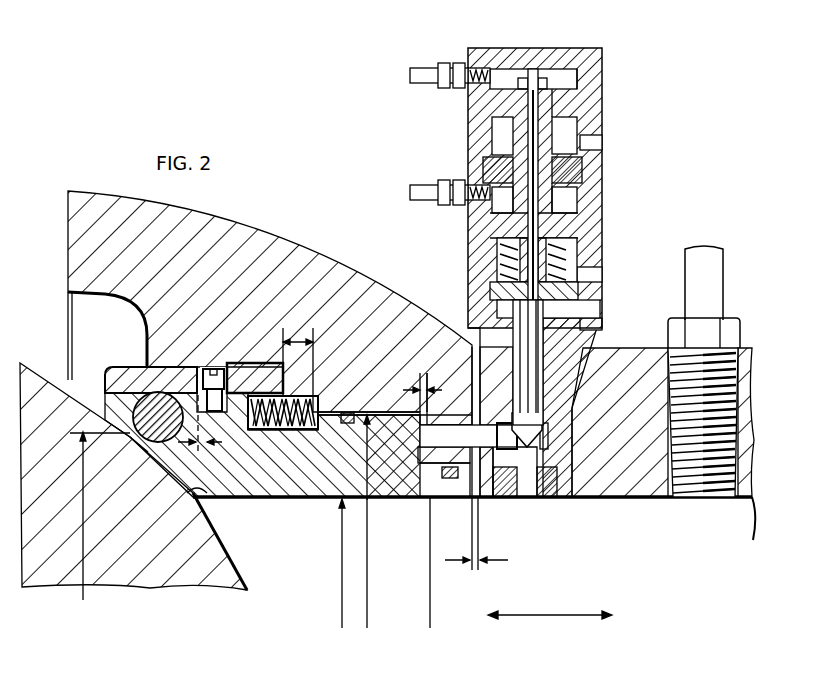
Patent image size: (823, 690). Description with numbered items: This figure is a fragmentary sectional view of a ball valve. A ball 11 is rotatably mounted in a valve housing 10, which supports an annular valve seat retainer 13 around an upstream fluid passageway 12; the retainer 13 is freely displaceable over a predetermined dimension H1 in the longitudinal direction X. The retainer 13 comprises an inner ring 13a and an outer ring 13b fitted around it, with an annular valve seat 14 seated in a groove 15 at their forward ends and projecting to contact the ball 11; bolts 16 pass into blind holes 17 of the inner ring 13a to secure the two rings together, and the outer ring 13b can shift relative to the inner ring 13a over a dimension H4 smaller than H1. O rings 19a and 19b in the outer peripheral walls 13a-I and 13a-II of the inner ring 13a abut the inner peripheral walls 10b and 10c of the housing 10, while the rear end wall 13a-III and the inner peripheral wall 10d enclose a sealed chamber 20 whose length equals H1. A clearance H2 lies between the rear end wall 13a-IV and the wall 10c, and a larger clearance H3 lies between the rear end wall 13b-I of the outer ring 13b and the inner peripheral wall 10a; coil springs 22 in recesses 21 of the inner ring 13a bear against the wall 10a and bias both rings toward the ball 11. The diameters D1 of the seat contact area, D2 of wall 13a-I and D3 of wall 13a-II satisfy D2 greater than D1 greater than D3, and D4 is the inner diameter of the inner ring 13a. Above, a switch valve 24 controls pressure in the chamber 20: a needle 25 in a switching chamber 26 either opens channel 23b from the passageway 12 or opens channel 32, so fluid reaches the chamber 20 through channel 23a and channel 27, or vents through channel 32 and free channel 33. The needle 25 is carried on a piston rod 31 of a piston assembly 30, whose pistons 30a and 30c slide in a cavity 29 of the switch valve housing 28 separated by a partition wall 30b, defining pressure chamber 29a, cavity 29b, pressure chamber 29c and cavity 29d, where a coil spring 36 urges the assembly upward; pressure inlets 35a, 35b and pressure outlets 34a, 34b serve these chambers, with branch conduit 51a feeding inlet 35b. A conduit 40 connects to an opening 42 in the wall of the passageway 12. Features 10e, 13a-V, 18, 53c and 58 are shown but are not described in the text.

The valve housing 10 is at (249, 232).
The inner peripheral wall 10a is at (313, 384).
The inner peripheral wall 10b is at (315, 432).
The inner peripheral wall 10c is at (436, 420).
The inner peripheral wall 10d is at (428, 425).
The body bore 10e is at (488, 497).
The ball 11 is at (139, 514).
The upstream fluid passageway 12 is at (658, 560).
The valve seat retainer 13 is at (282, 497).
The inner ring 13a is at (262, 497).
The outer peripheral wall 13a-I is at (366, 414).
The outer peripheral wall 13a-II is at (478, 400).
The rear end wall 13a-III is at (380, 500).
The rear end wall 13a-IV is at (472, 560).
The seal ring face V 13a-V is at (200, 510).
The outer ring 13b is at (126, 367).
The rear end wall 13b-I is at (281, 380).
The valve seat 14 is at (133, 412).
The groove 15 is at (148, 443).
The bolts 16 is at (208, 367).
The blind holes 17 is at (203, 418).
The retainer block 18 is at (235, 363).
The O ring 19a is at (348, 425).
The O ring 19b is at (450, 480).
The sealed chamber 20 is at (420, 430).
The recesses 21 is at (296, 430).
The coil spring 22 is at (258, 430).
The channel 23a is at (546, 508).
The channel 23b is at (518, 497).
The switch valve 24 is at (604, 216).
The needle 25 is at (548, 437).
The switching chamber 26 is at (542, 447).
The channel 27 is at (482, 413).
The switch valve housing 28 is at (595, 225).
The cavity 29 is at (574, 125).
The pressure chamber 29a is at (568, 69).
The cavity 29b is at (578, 110).
The pressure chamber 29c is at (578, 180).
The cavity 29d is at (570, 252).
The piston assembly 30 is at (510, 138).
The piston 30a is at (590, 78).
The partition wall 30b is at (495, 158).
The piston 30c is at (570, 205).
The piston rod 31 is at (600, 326).
The channel 32 is at (573, 368).
The free channel 33 is at (600, 308).
The pressure outlet 34a is at (602, 143).
The pressure outlet 34b is at (602, 275).
The pressure inlet 35a is at (486, 68).
The pressure inlet 35b is at (478, 202).
The coil spring 36 is at (503, 253).
The conduit 40 is at (723, 296).
The opening 42 is at (668, 400).
The branch conduit 51a is at (428, 186).
The fluid line 53c is at (428, 70).
The clearance 58 is at (68, 318).
The predetermined dimension H1 is at (414, 389).
The clearance dimension H2 is at (485, 565).
The clearance dimension H3 is at (301, 333).
The shift dimension H4 is at (200, 454).
The diametrical dimension D1 is at (83, 598).
The diametrical dimension D2 is at (367, 598).
The diametrical dimension D3 is at (430, 621).
The inner peripheral diameter D4 is at (342, 603).
The longitudinal direction X is at (562, 618).